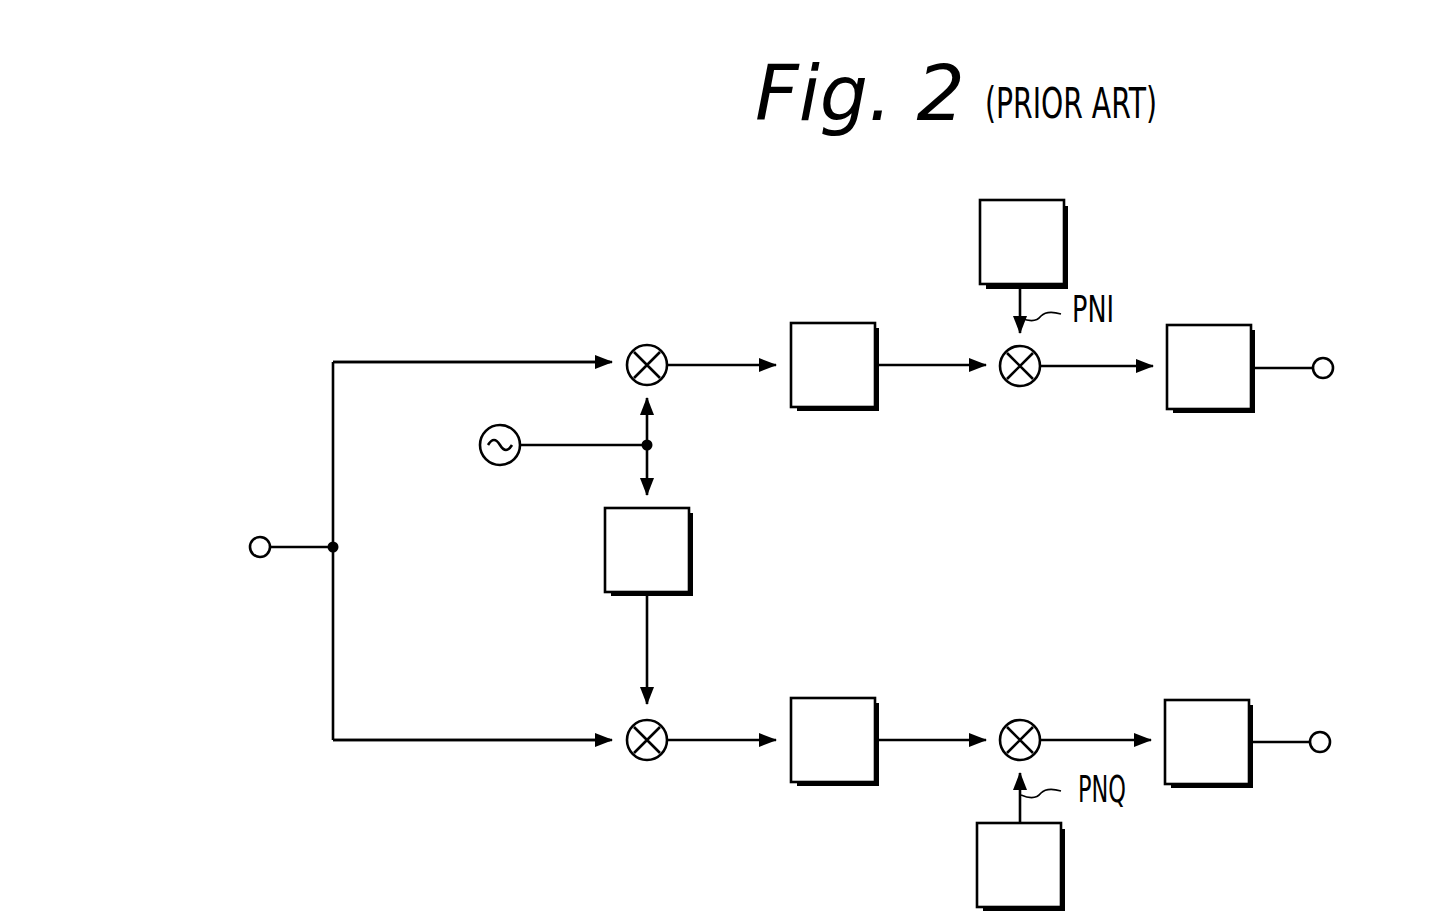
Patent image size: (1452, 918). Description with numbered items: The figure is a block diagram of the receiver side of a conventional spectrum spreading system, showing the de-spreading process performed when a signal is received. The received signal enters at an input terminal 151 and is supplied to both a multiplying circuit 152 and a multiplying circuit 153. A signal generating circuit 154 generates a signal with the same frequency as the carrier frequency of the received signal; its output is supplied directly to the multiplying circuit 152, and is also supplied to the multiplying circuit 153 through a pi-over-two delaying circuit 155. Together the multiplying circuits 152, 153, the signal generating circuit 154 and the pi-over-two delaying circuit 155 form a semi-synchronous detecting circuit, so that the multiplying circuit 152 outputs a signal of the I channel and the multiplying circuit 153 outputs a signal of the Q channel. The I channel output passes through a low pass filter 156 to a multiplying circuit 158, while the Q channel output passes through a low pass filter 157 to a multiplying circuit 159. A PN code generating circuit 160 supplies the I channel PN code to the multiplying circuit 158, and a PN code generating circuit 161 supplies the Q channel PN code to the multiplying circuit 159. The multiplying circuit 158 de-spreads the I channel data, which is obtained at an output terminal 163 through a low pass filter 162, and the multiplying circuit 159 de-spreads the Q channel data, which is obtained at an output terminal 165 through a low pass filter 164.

The input terminal 151 is at (252, 547).
The multiplying circuit 152 is at (648, 344).
The multiplying circuit 153 is at (647, 761).
The signal generating circuit 154 is at (473, 444).
The π/2 delaying circuit 155 is at (600, 550).
The low pass filter 156 is at (826, 411).
The low pass filter 157 is at (832, 697).
The multiplying circuit 158 is at (1019, 387).
The multiplying circuit 159 is at (1020, 719).
The PN code generating circuit 160 is at (979, 238).
The PN code generating circuit 161 is at (976, 862).
The low pass filter 162 is at (1204, 410).
The output terminal 163 is at (1334, 369).
The low pass filter 164 is at (1206, 699).
The output terminal 165 is at (1331, 743).